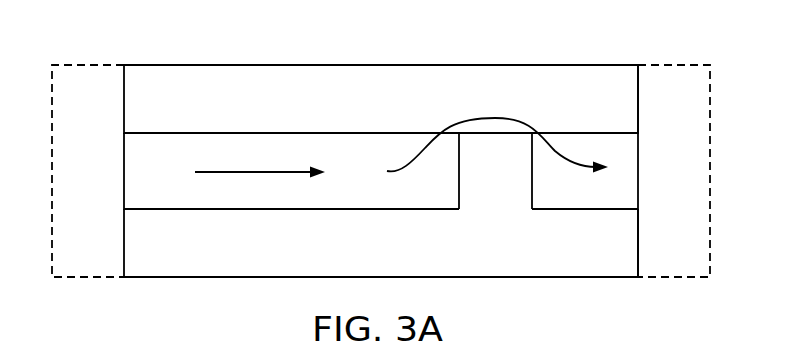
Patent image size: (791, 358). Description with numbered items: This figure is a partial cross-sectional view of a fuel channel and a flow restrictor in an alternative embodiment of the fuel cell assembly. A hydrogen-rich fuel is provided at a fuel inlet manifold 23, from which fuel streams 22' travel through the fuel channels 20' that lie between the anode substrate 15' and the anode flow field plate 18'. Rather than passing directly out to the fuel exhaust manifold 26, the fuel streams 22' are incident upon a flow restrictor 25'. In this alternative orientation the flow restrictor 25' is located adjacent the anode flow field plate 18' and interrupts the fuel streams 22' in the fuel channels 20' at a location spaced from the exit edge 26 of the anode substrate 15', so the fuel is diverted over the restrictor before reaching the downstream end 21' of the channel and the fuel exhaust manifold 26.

The anode substrate 15' is at (381, 80).
The anode flow field plate 18' is at (381, 264).
The fuel channels 20' is at (381, 196).
The channel end wall 21' is at (617, 147).
The fuel streams 22' is at (391, 137).
The fuel inlet manifold 23 is at (88, 95).
The flow restrictor 25' is at (535, 189).
The fuel exhaust manifold 26 is at (673, 100).